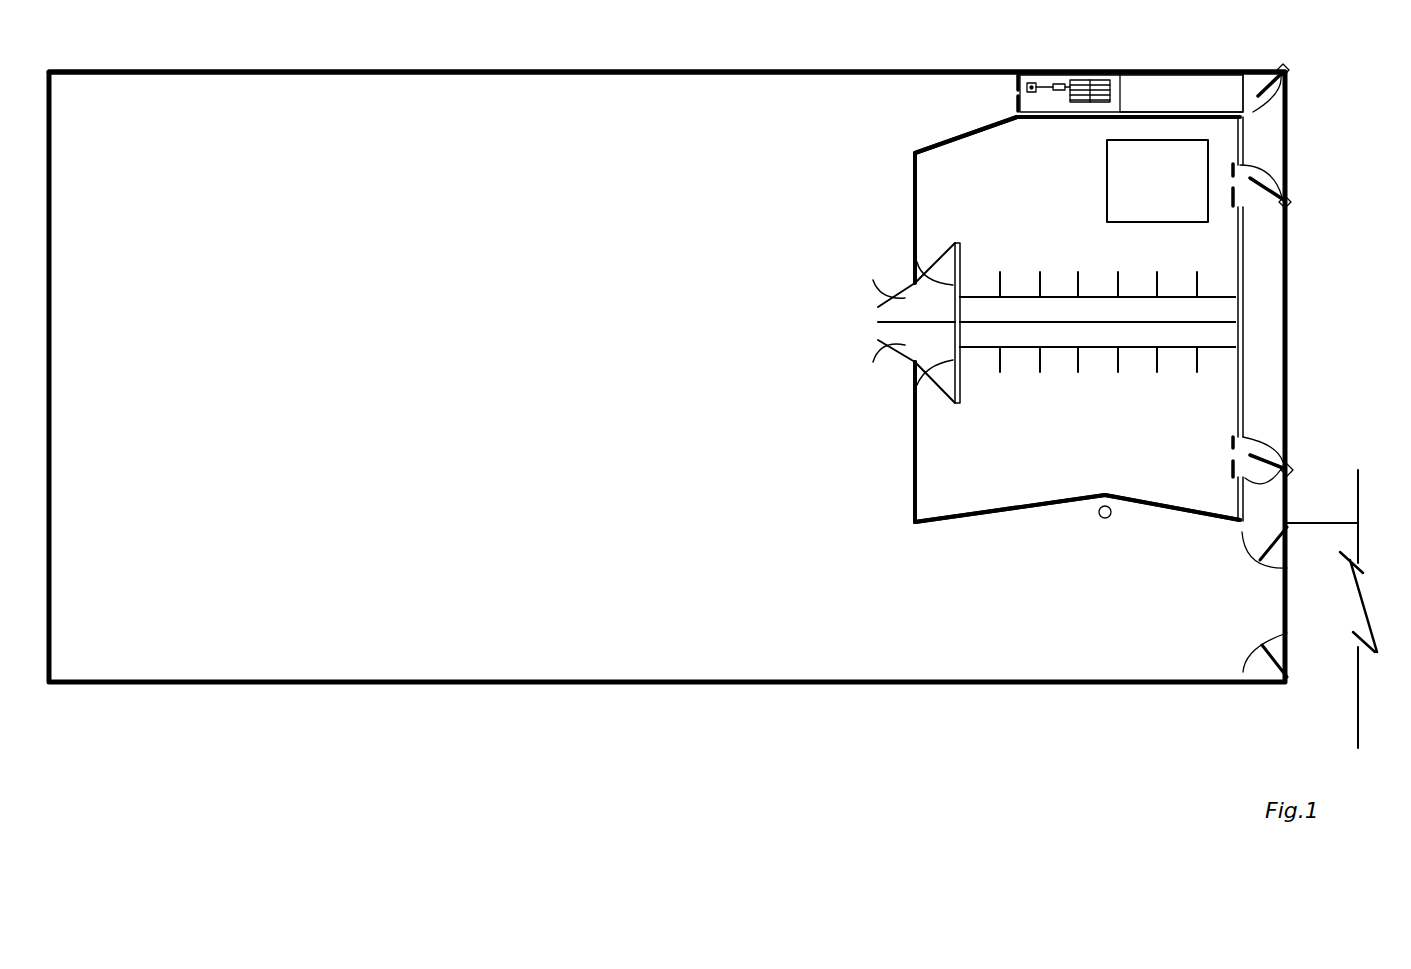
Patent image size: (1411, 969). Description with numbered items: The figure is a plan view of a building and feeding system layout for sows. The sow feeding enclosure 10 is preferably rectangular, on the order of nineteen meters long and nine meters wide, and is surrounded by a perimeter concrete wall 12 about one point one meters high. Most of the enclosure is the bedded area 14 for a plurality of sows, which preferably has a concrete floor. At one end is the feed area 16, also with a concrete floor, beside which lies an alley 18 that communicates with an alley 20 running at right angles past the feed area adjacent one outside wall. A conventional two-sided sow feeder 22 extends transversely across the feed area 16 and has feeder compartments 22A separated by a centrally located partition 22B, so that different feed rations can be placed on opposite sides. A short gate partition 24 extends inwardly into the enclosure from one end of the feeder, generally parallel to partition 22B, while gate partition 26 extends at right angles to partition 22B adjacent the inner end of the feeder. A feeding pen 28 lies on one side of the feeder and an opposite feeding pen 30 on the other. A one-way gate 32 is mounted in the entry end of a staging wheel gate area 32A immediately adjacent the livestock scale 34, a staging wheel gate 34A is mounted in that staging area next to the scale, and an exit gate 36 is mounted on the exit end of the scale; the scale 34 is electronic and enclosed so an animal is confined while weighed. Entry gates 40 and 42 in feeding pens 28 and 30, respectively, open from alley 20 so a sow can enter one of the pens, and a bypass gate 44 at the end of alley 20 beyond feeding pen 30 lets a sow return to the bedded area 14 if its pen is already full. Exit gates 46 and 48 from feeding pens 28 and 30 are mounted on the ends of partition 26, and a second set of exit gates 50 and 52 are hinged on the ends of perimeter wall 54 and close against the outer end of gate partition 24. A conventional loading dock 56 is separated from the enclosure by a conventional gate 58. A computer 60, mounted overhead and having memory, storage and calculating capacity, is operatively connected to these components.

The sow feeding enclosure 10 is at (322, 703).
The perimeter concrete wall 12 is at (780, 70).
The bedded area 14 is at (384, 422).
The feed area 16 is at (1177, 457).
The alley 18 is at (1008, 78).
The alley 20 is at (1250, 316).
The two-sided sow feeder 22 is at (1207, 297).
The feeder compartments 22A is at (1137, 325).
The partition 22B is at (1193, 325).
The gate partition 24 is at (962, 400).
The gate partition 26 is at (960, 246).
The feeding pen 28 is at (960, 181).
The feeding pen 30 is at (960, 480).
The one-way gate 32 is at (1012, 108).
The staging wheel gate area 32A is at (1046, 84).
The livestock scale 34 is at (1208, 74).
The staging wheel gate 34A is at (1105, 80).
The exit gate 36 is at (1265, 95).
The entry gate 40 is at (1288, 200).
The entry gate 42 is at (1290, 467).
The bypass gate 44 is at (1268, 545).
The exit gate 46 is at (922, 262).
The exit gate 48 is at (922, 390).
The exit gate 50 is at (885, 290).
The exit gate 52 is at (880, 342).
The perimeter wall 54 is at (1025, 512).
The loading dock 56 is at (1325, 520).
The gate 58 is at (1273, 657).
The computer 60 is at (1107, 185).